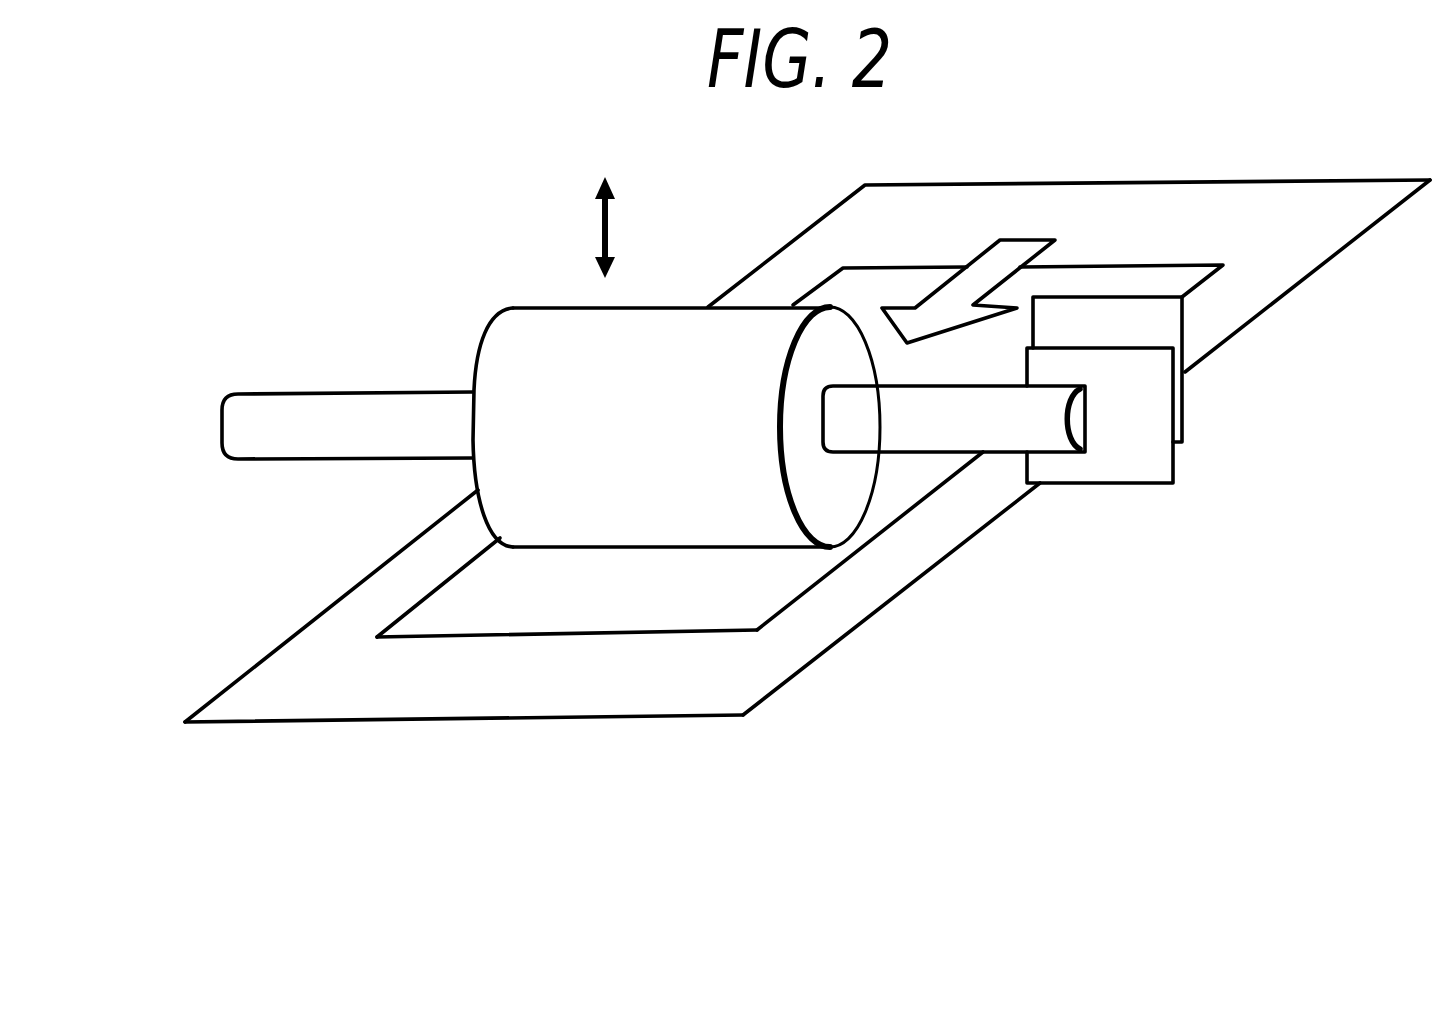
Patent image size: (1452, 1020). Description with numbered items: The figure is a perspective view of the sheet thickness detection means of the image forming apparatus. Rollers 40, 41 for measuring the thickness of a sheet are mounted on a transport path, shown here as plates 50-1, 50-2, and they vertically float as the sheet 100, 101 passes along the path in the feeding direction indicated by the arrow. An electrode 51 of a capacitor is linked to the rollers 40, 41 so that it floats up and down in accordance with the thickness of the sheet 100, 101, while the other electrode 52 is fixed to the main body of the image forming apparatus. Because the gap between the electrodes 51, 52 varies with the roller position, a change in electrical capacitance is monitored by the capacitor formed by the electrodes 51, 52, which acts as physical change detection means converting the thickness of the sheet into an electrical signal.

The roller 40 is at (676, 371).
The roller 41 is at (678, 313).
The first plate 50-1 is at (812, 451).
The second plate 50-2 is at (1348, 220).
The electrode 51 is at (1108, 472).
The other electrode 52 is at (1183, 412).
The sheet 100 is at (800, 490).
The print medium sheet 101 is at (528, 620).